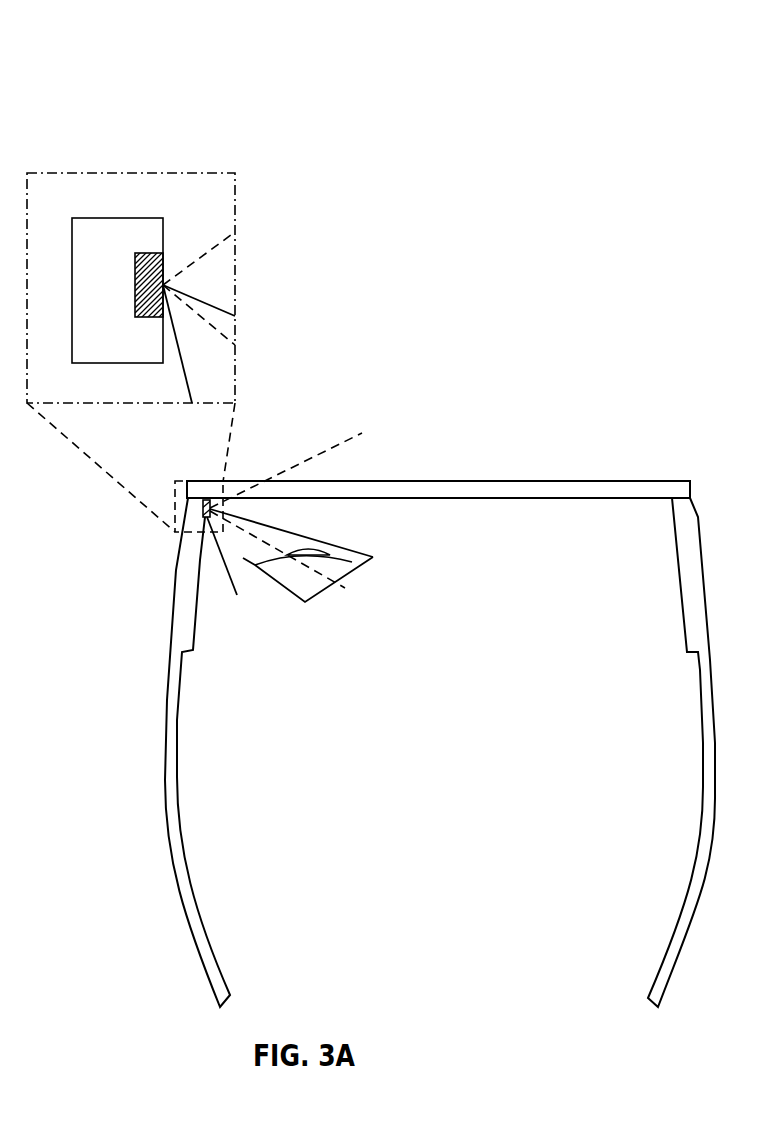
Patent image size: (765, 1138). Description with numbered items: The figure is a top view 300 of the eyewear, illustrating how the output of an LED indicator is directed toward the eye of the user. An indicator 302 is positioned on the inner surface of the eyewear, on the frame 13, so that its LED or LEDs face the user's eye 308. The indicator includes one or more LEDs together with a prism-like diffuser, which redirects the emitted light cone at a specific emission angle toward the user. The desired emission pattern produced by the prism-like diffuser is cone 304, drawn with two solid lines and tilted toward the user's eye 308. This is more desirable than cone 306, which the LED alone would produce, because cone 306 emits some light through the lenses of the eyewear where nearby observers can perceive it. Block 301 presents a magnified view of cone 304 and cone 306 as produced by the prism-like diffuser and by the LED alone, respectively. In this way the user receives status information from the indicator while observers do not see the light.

The top view 300 is at (133, 35).
The block 301 is at (140, 170).
The indicator 302 is at (195, 511).
The frame 13 is at (188, 566).
The cone 304 is at (229, 574).
The cone 306 is at (338, 441).
The user's eye 308 is at (353, 591).